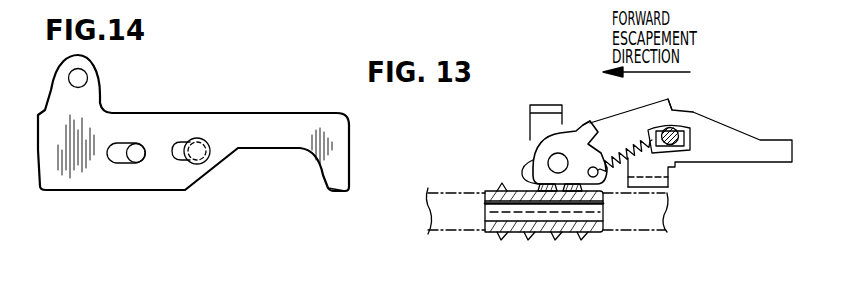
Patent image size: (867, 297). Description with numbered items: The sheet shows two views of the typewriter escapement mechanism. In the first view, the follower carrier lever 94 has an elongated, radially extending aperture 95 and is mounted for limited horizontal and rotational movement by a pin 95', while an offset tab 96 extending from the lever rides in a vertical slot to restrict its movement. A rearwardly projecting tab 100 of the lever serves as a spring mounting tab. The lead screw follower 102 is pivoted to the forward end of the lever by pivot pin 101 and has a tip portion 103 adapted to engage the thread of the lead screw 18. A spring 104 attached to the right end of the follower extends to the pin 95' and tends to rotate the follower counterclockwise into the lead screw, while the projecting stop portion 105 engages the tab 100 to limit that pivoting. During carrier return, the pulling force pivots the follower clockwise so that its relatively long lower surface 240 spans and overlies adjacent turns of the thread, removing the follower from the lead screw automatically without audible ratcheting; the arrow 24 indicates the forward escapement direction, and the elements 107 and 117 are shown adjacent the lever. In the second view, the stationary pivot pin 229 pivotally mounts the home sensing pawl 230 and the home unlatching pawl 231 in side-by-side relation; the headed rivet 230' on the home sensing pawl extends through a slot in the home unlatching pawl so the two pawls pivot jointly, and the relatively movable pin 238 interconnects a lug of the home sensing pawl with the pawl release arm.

In FIG. 13, the lead screw 18 is at (500, 225).
In FIG. 13, the forward escapement direction arrow 24 is at (686, 70).
In FIG. 13, the follower carrier lever 94 is at (728, 135).
In FIG. 13, the elongated and radially extending aperture 95 is at (686, 122).
In FIG. 13, the pin 95' is at (695, 143).
In FIG. 13, the offset tab 96 is at (643, 180).
In FIG. 13, the rearwardly projecting tab 100 is at (540, 104).
In FIG. 13, the pivot pin 101 is at (595, 118).
In FIG. 13, the lead screw follower 102 is at (566, 157).
In FIG. 13, the tip portion 103 is at (522, 177).
In FIG. 13, the spring 104 is at (633, 143).
In FIG. 13, the projecting stop portion 105 is at (578, 130).
In FIG. 13, the bracket 107 is at (670, 187).
In FIG. 13, the lever corner 117 is at (672, 104).
In FIG. 14, the stationary pivot pin 229 is at (143, 147).
In FIG. 14, the home sensing pawl 230 is at (193, 123).
In FIG. 14, the headed rivet 230' is at (217, 128).
In FIG. 14, the home unlatching pawl 231 is at (335, 173).
In FIG. 14, the relatively movable pin 238 is at (88, 76).
In FIG. 13, the lower surface 240 is at (538, 178).